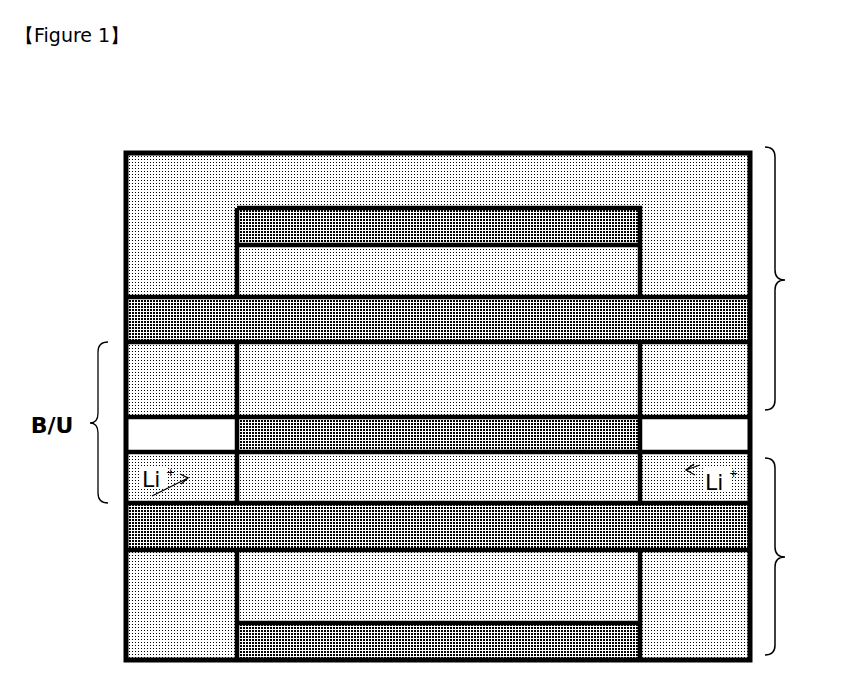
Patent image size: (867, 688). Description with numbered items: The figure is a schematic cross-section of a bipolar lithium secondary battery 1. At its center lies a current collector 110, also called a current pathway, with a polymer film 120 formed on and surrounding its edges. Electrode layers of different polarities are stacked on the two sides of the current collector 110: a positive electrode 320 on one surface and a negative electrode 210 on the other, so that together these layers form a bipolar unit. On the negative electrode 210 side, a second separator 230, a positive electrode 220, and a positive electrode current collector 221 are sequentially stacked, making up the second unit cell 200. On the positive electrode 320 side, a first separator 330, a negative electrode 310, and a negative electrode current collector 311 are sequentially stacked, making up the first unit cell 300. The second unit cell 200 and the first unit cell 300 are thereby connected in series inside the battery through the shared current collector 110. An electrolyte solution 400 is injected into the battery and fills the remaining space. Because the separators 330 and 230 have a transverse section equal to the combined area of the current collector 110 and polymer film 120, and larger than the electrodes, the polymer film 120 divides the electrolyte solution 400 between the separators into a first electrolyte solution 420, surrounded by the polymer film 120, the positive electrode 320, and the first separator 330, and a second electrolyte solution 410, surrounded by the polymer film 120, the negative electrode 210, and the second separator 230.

The bipolar lithium secondary battery 1 is at (460, 115).
The current collector 110 is at (438, 435).
The polymer film 120 is at (438, 434).
The second unit cell 200 is at (807, 556).
The negative electrode 210 is at (438, 477).
The positive electrode 220 is at (438, 586).
The positive electrode current collector 221 is at (438, 641).
The second separator 230 is at (438, 526).
The first unit cell 300 is at (807, 278).
The negative electrode 310 is at (438, 271).
The negative electrode current collector 311 is at (438, 226).
The positive electrode 320 is at (438, 379).
The first separator 330 is at (438, 319).
The electrolyte solution 400 is at (438, 406).
The second electrolyte solution 410 is at (152, 496).
The first electrolyte solution 420 is at (438, 379).